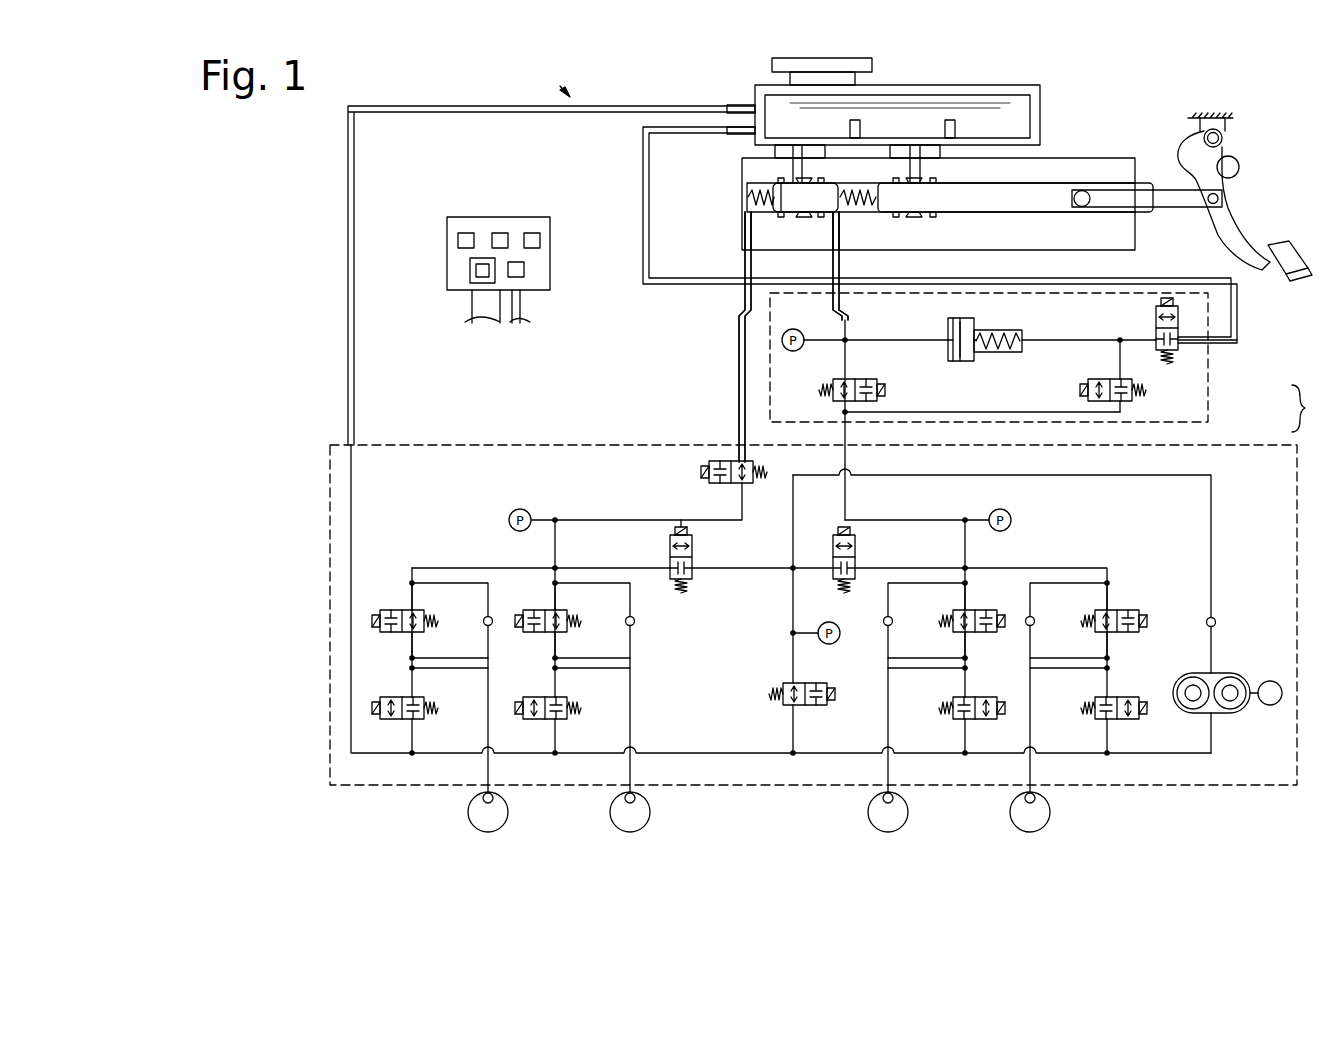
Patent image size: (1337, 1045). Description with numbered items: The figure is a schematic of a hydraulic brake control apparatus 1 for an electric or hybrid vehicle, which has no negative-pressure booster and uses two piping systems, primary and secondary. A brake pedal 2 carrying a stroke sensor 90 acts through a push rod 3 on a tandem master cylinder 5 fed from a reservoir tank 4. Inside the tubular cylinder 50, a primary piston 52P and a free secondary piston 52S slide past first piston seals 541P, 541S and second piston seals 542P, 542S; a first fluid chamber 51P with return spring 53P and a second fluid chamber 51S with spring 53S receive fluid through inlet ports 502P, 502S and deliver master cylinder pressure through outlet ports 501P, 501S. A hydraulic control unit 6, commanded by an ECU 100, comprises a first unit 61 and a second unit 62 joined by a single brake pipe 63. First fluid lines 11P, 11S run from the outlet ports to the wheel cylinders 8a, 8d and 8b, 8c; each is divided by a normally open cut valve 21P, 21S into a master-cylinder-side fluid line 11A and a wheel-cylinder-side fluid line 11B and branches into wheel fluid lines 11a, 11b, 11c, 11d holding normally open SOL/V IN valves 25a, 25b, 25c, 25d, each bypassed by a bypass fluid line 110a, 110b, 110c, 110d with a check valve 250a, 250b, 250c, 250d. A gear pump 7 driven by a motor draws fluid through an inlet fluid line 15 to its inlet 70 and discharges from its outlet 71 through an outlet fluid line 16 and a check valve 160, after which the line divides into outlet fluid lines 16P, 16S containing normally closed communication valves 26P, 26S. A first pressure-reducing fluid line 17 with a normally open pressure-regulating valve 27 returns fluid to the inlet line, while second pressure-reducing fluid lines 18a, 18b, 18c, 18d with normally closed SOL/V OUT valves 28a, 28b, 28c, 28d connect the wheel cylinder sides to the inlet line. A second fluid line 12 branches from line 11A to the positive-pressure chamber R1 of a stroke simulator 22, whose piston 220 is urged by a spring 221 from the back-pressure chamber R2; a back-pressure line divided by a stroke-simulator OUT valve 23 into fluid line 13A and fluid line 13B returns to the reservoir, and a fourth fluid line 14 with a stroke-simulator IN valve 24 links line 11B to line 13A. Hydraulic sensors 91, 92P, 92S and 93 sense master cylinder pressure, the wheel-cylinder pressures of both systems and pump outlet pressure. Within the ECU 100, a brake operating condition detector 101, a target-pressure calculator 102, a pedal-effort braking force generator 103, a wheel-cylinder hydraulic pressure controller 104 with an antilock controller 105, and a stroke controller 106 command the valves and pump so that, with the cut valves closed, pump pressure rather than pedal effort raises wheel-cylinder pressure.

The brake control apparatus 1 is at (560, 86).
The brake pedal 2 is at (1238, 222).
The push rod 3 is at (1166, 190).
The reservoir tank 4 is at (1042, 95).
The master cylinder 5 is at (1092, 153).
The hydraulic control unit 6 is at (1307, 408).
The pump 7 is at (1228, 675).
The wheel cylinder 8a is at (1040, 798).
The wheel cylinder 8b is at (478, 798).
The wheel cylinder 8c is at (622, 798).
The wheel cylinder 8d is at (898, 798).
The fluid line 11A is at (833, 302).
The fluid line 11B is at (843, 460).
The first fluid line 11P is at (668, 313).
The first fluid line 11S is at (628, 390).
The fluid line 11a is at (1078, 568).
The fluid line 11b is at (460, 568).
The fluid line 11c is at (557, 598).
The fluid line 11d is at (963, 598).
The second fluid line 12 is at (883, 340).
The fluid line 13A is at (1067, 340).
The fluid line 13B is at (1238, 305).
The fourth fluid line 14 is at (1028, 412).
The inlet fluid line 15 is at (352, 497).
The outlet fluid line 16 is at (1128, 478).
The outlet fluid line 16P is at (910, 568).
The outlet fluid line 16S is at (790, 578).
The first pressure-reducing fluid line 17 is at (790, 737).
The second pressure-reducing fluid line 18a is at (1105, 740).
The second pressure-reducing fluid line 18b is at (415, 740).
The second pressure-reducing fluid line 18c is at (557, 740).
The second pressure-reducing fluid line 18d is at (963, 740).
The cut valve 21P is at (885, 390).
The cut valve 21S is at (748, 485).
The stroke simulator 22 is at (948, 355).
The piston 220 is at (970, 352).
The spring 221 is at (998, 333).
The positive-pressure chamber R1 is at (948, 330).
The back-pressure chamber R2 is at (978, 352).
The stroke-simulator OUT valve 23 is at (1155, 318).
The stroke-simulator IN valve 24 is at (1108, 379).
The solenoid IN valve 25a is at (1120, 610).
The solenoid IN valve 25b is at (398, 610).
The solenoid IN valve 25c is at (535, 610).
The solenoid IN valve 25d is at (992, 610).
The check valve 250a is at (1034, 617).
The check valve 250b is at (486, 616).
The check valve 250c is at (636, 621).
The check valve 250d is at (885, 617).
The communication valve 26P is at (857, 562).
The communication valve 26S is at (670, 562).
The pressure-regulating valve 27 is at (785, 683).
The solenoid OUT valve 28a is at (1120, 697).
The solenoid OUT valve 28b is at (398, 697).
The solenoid OUT valve 28c is at (535, 697).
The solenoid OUT valve 28d is at (992, 697).
The cylinder 50 is at (905, 218).
The outlet port 501P is at (838, 240).
The outlet port 501S is at (747, 240).
The inlet port 502P is at (915, 180).
The inlet port 502S is at (793, 182).
The first fluid chamber 51P is at (860, 206).
The second fluid chamber 51S is at (756, 196).
The primary piston 52P is at (1040, 207).
The secondary piston 52S is at (806, 218).
The compressed coil spring 53P is at (870, 216).
The compressed coil spring 53S is at (800, 216).
The first piston seal 541P is at (896, 178).
The first piston seal 541S is at (778, 181).
The second piston seal 542P is at (933, 178).
The second piston seal 542S is at (820, 178).
The first unit 61 is at (1210, 378).
The second unit 62 is at (1230, 445).
The brake pipe 63 is at (848, 430).
The inlet of the pump 70 is at (1214, 715).
The outlet of the pump 71 is at (1200, 675).
The stroke sensor 90 is at (1240, 165).
The hydraulic sensor 91 is at (793, 352).
The hydraulic sensor 92P is at (1006, 509).
The hydraulic sensor 92S is at (514, 509).
The hydraulic sensor 93 is at (832, 645).
The electronic control unit 100 is at (452, 217).
The brake operating condition detector 101 is at (458, 240).
The calculator 102 is at (497, 233).
The pedal-effort braking force generator 103 is at (533, 233).
The wheel-cylinder hydraulic pressure controller 104 is at (472, 265).
The antilock controller 105 is at (478, 272).
The stroke controller 106 is at (524, 270).
The bypass fluid line 110a is at (1030, 650).
The bypass fluid line 110b is at (488, 650).
The bypass fluid line 110c is at (630, 650).
The bypass fluid line 110d is at (888, 650).
The check valve 160 is at (1216, 619).